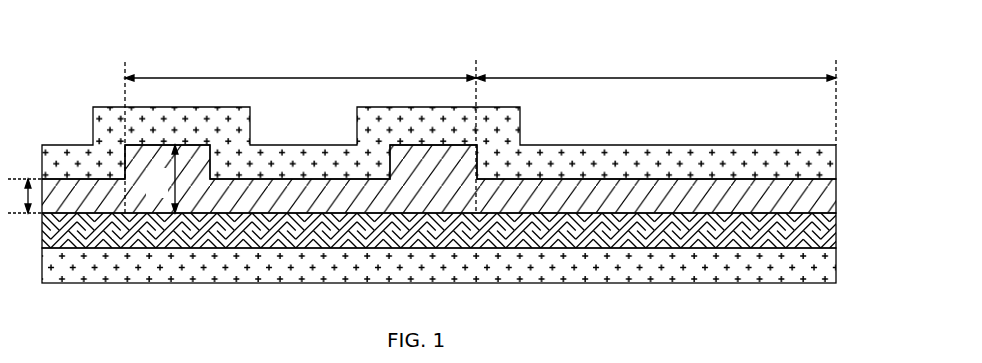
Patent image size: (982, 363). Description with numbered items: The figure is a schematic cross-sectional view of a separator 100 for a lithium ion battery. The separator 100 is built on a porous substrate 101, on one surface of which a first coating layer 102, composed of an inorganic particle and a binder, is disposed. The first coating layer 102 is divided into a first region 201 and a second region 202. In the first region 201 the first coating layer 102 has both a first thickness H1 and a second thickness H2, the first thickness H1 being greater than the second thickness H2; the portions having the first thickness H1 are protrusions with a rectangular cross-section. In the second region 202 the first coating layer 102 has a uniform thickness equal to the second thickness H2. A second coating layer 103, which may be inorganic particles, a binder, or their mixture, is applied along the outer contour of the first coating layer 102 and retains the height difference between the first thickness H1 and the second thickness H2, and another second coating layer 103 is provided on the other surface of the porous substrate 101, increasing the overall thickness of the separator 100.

The separator 100 is at (481, 141).
The porous substrate 101 is at (834, 236).
The first coating layer 102 is at (834, 202).
The second coating layer 103 is at (834, 164).
The first region 201 is at (300, 132).
The second region 202 is at (656, 98).
The first thickness H1 is at (162, 179).
The second thickness H2 is at (22, 196).